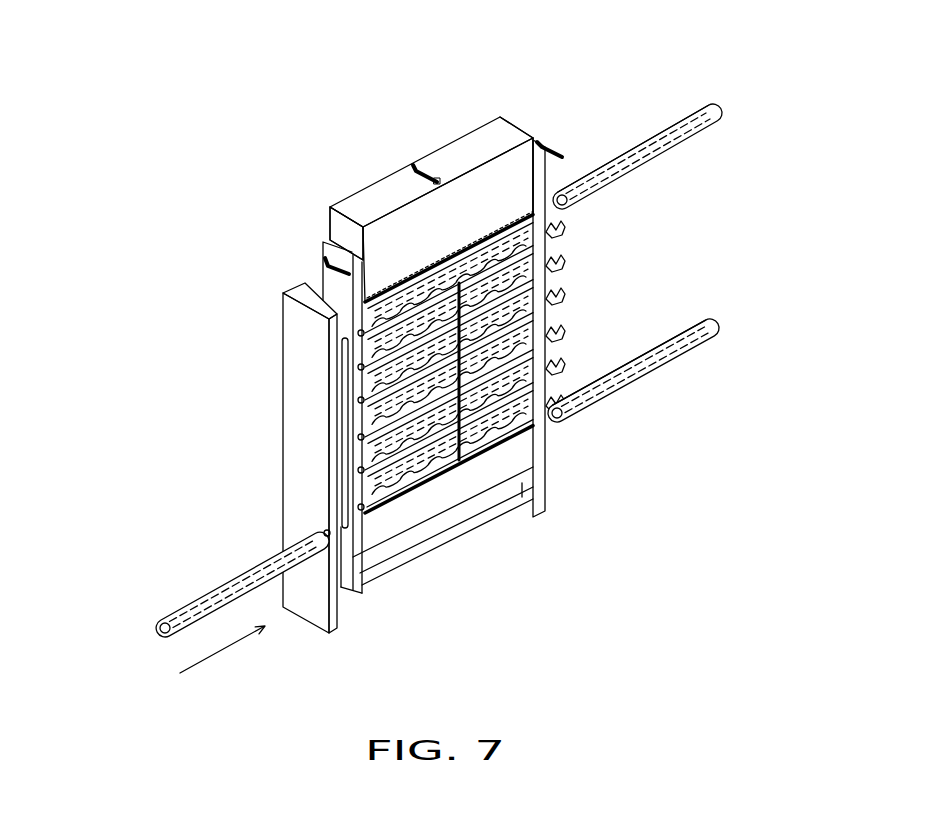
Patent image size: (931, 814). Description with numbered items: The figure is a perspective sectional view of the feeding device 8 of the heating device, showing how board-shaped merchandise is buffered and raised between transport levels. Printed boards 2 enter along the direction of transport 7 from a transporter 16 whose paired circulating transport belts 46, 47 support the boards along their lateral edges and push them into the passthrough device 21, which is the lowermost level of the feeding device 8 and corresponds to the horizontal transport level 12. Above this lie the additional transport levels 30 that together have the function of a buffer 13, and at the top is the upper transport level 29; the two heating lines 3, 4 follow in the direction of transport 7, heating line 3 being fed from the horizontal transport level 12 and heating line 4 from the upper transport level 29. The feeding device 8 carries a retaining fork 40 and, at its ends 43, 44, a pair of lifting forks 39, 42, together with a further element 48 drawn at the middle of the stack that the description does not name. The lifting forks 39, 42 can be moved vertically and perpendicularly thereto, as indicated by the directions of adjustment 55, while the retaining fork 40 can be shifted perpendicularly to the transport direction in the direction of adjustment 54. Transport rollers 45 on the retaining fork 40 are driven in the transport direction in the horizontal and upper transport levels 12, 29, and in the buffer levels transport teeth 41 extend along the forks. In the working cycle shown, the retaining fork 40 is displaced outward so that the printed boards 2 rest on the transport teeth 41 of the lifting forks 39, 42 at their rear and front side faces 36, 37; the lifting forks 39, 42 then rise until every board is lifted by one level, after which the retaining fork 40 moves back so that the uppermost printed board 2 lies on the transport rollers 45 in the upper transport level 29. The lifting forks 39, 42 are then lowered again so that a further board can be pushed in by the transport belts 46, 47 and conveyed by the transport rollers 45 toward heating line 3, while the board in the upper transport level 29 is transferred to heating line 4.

The printed board 2 is at (553, 224).
The heating line 3 is at (740, 304).
The heating line 4 is at (742, 89).
The direction of transport 7 is at (223, 652).
The feeding device 8 is at (236, 72).
The horizontal transport level 12 is at (618, 362).
The buffer 13 is at (338, 468).
The transporter 16 is at (140, 607).
The passthrough device 21 is at (476, 440).
The upper transport level 29 is at (597, 158).
The transport levels 30 is at (357, 372).
The rear side face 36 is at (357, 355).
The front side face 37 is at (558, 226).
The lifting fork 39 is at (325, 238).
The retaining fork 40 is at (470, 155).
The transport teeth 41 is at (357, 422).
The lifting fork 42 is at (550, 167).
The end 43 is at (330, 236).
The end 44 is at (520, 117).
The transport rollers 45 is at (412, 250).
The transport belt 46 is at (653, 135).
The transport belt 47 is at (363, 414).
The center strut 48 is at (462, 280).
The direction of adjustment 54 is at (443, 155).
The directions of adjustment 55 is at (313, 287).